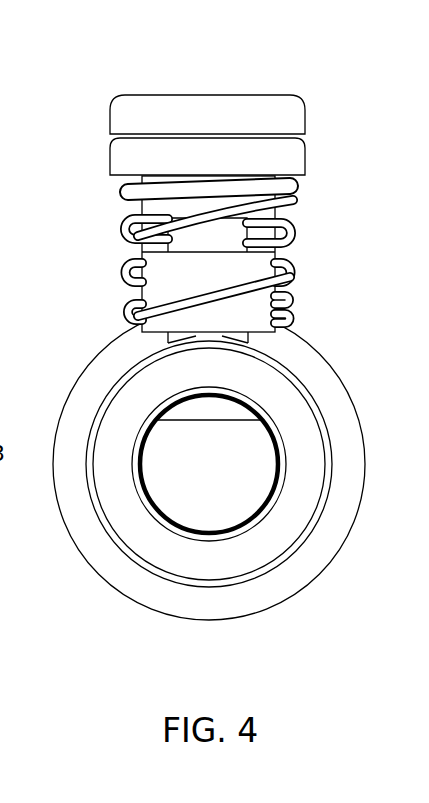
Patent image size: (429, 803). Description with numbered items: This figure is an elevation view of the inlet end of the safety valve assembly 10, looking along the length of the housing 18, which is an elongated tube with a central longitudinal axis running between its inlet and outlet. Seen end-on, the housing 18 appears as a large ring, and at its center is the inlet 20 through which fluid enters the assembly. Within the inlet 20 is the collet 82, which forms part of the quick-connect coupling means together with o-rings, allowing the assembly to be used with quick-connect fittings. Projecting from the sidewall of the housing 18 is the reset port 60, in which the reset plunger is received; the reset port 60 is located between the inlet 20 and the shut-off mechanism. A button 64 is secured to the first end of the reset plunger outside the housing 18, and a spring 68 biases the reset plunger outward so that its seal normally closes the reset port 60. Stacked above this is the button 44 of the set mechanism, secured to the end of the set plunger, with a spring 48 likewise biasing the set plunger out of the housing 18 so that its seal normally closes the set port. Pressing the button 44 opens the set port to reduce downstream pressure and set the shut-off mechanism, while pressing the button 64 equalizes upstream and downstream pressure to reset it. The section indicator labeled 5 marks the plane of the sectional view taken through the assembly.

The safety valve assembly 10 is at (346, 74).
The housing 18 is at (331, 367).
The inlet 20 is at (331, 472).
The collet 82 is at (303, 510).
The reset port 60 is at (140, 290).
The spring 48 is at (294, 232).
The spring 68 is at (295, 186).
The button 64 is at (297, 153).
The button 44 is at (117, 117).
The section line 5 is at (207, 95).